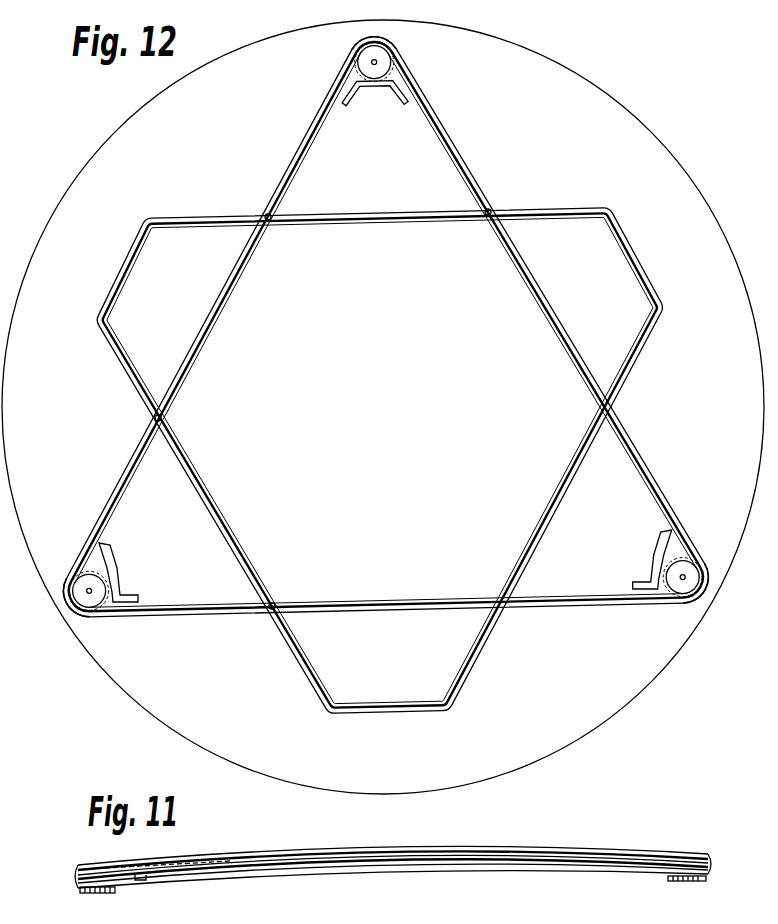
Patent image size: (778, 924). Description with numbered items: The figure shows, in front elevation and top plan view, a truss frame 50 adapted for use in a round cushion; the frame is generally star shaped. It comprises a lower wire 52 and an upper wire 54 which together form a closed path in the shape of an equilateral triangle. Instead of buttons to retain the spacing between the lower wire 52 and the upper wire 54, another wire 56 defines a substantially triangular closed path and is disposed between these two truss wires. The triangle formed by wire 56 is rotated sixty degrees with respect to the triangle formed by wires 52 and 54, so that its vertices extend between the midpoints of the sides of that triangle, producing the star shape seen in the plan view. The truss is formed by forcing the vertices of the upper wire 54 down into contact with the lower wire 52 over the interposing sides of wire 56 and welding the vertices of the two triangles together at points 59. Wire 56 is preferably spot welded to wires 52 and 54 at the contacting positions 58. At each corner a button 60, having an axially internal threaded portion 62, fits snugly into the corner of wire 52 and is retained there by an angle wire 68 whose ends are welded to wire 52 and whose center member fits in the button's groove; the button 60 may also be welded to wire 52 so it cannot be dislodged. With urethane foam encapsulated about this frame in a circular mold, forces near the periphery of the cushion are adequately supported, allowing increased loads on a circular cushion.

In FIG. 12, the truss frame 50 is at (192, 212).
In FIG. 11, the truss frame 50 is at (596, 848).
In FIG. 11, the lower wire 52 is at (256, 881).
In FIG. 12, the upper wire 54 is at (464, 181).
In FIG. 11, the upper wire 54 is at (313, 854).
In FIG. 12, the wire 56 is at (354, 216).
In FIG. 11, the wire 56 is at (397, 866).
In FIG. 12, the contacting positions 58 is at (273, 212).
In FIG. 12, the welding points 59 is at (372, 40).
In FIG. 11, the welding points 59 is at (77, 864).
In FIG. 12, the button 60 is at (357, 66).
In FIG. 11, the button 60 is at (96, 893).
In FIG. 12, the axially internal threaded portion 62 is at (380, 63).
In FIG. 12, the angle wire 68 is at (386, 90).